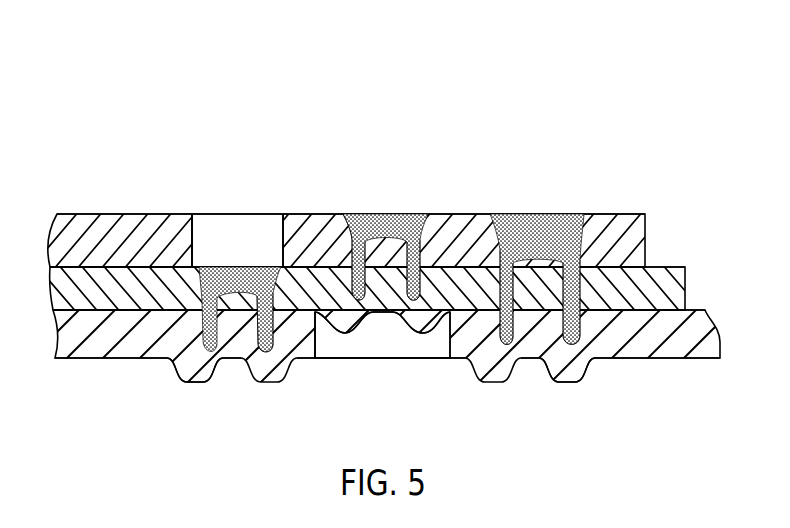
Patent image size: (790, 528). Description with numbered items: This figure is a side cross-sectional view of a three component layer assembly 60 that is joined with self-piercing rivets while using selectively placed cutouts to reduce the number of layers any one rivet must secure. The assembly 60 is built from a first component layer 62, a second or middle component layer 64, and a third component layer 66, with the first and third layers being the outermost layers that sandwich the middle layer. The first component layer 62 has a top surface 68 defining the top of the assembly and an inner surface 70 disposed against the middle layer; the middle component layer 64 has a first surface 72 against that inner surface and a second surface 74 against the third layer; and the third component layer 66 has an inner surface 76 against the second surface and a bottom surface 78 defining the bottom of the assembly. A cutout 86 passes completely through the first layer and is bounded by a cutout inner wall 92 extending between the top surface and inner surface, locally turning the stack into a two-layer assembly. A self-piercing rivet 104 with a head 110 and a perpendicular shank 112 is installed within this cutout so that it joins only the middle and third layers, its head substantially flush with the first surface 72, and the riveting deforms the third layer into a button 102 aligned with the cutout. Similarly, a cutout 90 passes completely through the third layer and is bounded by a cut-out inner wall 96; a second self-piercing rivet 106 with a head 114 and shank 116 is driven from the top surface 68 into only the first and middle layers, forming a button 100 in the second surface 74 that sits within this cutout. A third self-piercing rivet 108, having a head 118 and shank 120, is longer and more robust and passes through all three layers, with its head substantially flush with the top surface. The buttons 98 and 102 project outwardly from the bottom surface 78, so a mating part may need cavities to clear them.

The three component layer assembly 60 is at (598, 70).
The first component layer 62 is at (635, 250).
The second component layer 64 is at (672, 292).
The third component layer 66 is at (705, 345).
The top surface 68 is at (113, 213).
The inner surface 70 is at (75, 264).
The first surface 72 is at (53, 276).
The second surface 74 is at (78, 306).
The inner surface 76 is at (65, 323).
The bottom surface 78 is at (98, 358).
The cutout 86 is at (278, 211).
The cutout 90 is at (401, 349).
The cutout inner wall 92 is at (197, 213).
The cut-out inner wall 96 is at (316, 353).
The button 98 is at (198, 383).
The button 100 is at (360, 334).
The button 102 is at (570, 383).
The self-piercing rivet 104 is at (206, 266).
The self-piercing rivet 106 is at (357, 214).
The third self-piercing rivet 108 is at (505, 214).
The head 110 is at (231, 267).
The shank 112 is at (258, 277).
The head 114 is at (393, 228).
The shank 116 is at (340, 228).
The head 118 is at (542, 228).
The shank 120 is at (498, 250).